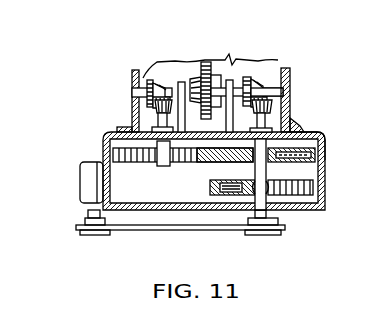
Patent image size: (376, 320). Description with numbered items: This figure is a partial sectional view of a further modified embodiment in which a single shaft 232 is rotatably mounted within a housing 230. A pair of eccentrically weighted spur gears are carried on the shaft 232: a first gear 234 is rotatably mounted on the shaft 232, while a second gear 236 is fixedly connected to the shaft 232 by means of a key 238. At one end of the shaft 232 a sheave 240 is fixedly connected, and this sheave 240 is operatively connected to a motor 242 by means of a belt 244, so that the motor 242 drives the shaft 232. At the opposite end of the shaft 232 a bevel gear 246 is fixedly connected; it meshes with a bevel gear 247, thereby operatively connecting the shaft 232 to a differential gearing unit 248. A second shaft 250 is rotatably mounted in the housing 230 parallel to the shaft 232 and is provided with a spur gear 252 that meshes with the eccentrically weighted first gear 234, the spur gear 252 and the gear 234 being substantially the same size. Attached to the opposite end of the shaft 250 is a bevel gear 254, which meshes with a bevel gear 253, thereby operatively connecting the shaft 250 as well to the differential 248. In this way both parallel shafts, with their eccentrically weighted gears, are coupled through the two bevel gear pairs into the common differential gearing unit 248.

The housing 230 is at (105, 135).
The shaft 232 is at (261, 214).
The first gear 234 is at (321, 135).
The second gear 236 is at (303, 195).
The key 238 is at (265, 188).
The sheave 240 is at (263, 233).
The motor 242 is at (90, 192).
The belt 244 is at (170, 230).
The bevel gear 246 is at (271, 115).
The bevel gear 247 is at (241, 79).
The differential gearing unit 248 is at (218, 57).
The shaft 250 is at (158, 117).
The spur gear 252 is at (131, 167).
The bevel gear 253 is at (154, 64).
The bevel gear 254 is at (138, 110).